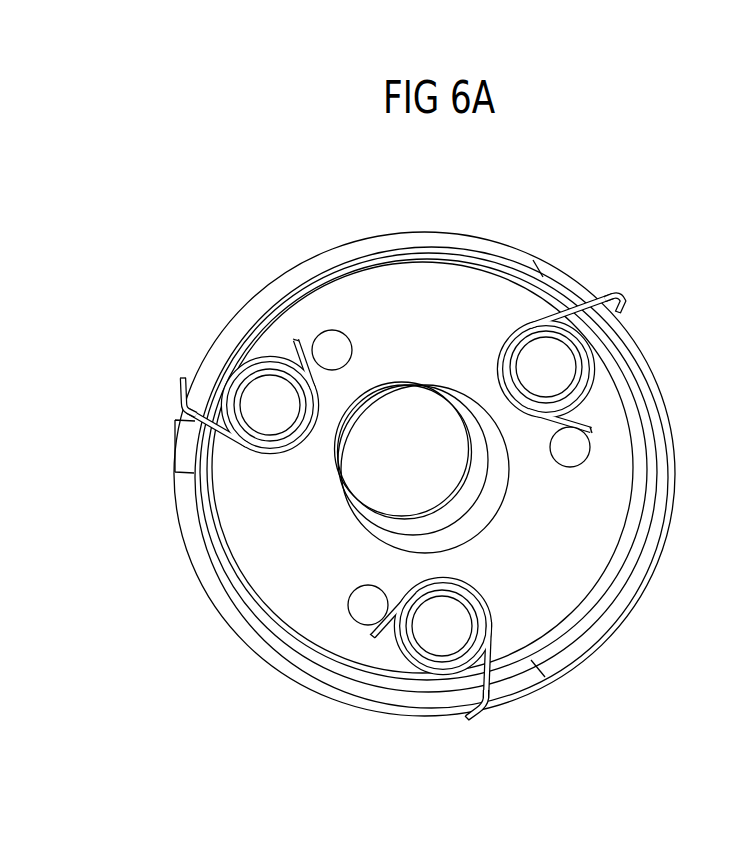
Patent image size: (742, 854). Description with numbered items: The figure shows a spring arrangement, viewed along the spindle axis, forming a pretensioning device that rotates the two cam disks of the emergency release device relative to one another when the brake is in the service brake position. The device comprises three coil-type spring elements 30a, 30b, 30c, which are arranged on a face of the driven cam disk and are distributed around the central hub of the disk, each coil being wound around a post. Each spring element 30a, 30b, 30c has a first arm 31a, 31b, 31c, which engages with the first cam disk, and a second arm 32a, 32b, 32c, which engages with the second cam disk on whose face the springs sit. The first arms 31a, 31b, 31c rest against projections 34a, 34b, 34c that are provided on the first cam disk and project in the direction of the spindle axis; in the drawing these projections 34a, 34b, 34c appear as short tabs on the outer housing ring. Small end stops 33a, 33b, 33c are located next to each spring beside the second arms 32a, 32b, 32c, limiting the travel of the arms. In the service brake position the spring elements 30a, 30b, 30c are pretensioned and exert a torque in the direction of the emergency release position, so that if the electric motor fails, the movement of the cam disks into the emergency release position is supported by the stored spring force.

The spring element 30a is at (237, 373).
The spring element 30b is at (590, 357).
The spring element 30c is at (447, 670).
The first arm 31a is at (178, 387).
The first arm 31b is at (606, 301).
The first arm 31c is at (480, 718).
The second arm 32a is at (240, 375).
The second arm 32b is at (592, 423).
The second arm 32c is at (385, 640).
The end stop 33a is at (333, 345).
The end stop 33b is at (578, 449).
The end stop 33c is at (365, 615).
The projection 34a is at (180, 444).
The projection 34b is at (553, 276).
The projection 34c is at (527, 678).